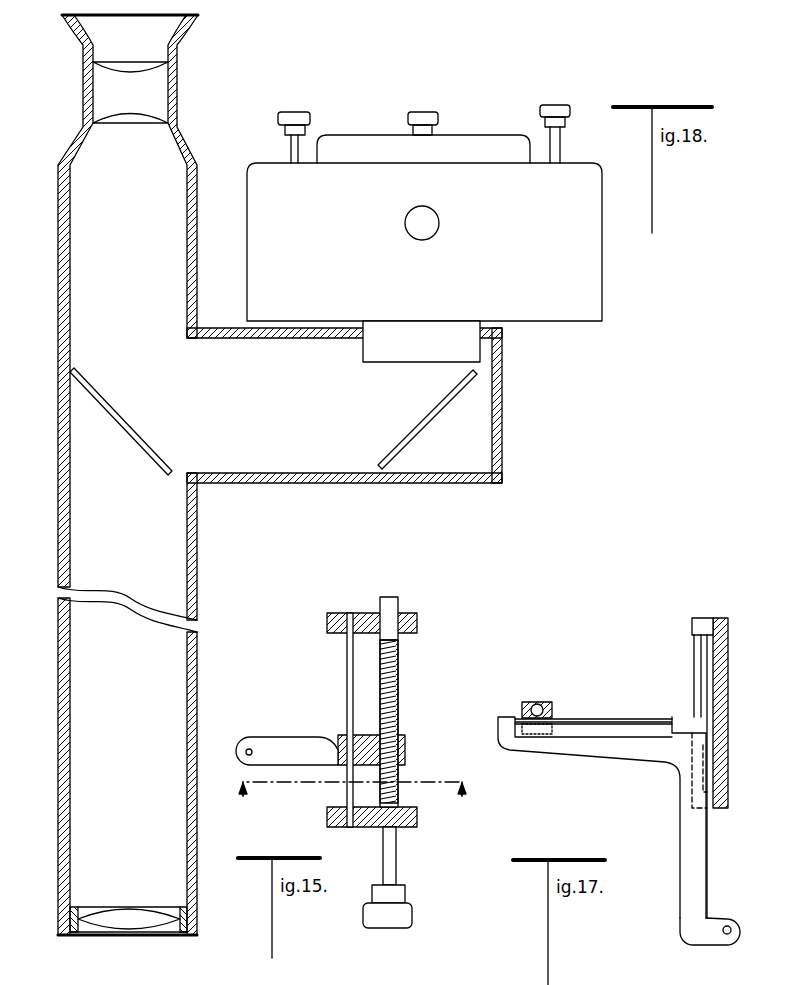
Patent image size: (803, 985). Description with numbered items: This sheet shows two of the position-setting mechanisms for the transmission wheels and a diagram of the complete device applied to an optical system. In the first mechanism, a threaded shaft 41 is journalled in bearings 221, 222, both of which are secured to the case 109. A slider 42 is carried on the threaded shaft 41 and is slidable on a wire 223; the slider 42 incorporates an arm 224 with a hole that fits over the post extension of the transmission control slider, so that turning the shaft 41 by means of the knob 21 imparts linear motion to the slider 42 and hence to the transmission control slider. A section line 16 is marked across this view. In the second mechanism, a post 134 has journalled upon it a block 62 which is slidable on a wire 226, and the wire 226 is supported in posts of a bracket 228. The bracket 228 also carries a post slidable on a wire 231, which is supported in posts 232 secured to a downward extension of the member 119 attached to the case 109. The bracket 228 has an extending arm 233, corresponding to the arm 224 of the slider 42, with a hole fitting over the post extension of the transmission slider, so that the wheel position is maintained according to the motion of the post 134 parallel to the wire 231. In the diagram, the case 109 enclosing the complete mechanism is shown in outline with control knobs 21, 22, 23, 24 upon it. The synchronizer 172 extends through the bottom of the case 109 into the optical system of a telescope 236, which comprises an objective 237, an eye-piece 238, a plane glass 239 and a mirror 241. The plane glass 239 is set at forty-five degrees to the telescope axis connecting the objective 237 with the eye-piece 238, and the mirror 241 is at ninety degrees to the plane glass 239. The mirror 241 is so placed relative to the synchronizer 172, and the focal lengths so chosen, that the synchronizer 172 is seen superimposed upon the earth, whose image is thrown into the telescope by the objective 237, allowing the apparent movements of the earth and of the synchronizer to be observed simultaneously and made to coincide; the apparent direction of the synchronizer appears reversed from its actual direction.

In FIG. 18, the telescope 236 is at (61, 386).
In FIG. 18, the eye-piece 238 is at (150, 63).
In FIG. 18, the objective 237 is at (150, 890).
In FIG. 18, the plane glass 239 is at (161, 463).
In FIG. 18, the mirror 241 is at (393, 456).
In FIG. 18, the case 109 is at (553, 323).
In FIG. 18, the synchronizer 172 is at (367, 352).
In FIG. 18, the control knob 21 is at (439, 223).
In FIG. 15, the control knob 21 is at (412, 910).
In FIG. 18, the control knob 22 is at (423, 112).
In FIG. 18, the control knob 23 is at (552, 105).
In FIG. 18, the control knob 24 is at (294, 112).
In FIG. 15, the bearing 221 is at (418, 628).
In FIG. 15, the bearing 222 is at (418, 820).
In FIG. 15, the wire 223 is at (347, 697).
In FIG. 15, the arm 224 is at (291, 738).
In FIG. 15, the threaded shaft 41 is at (398, 688).
In FIG. 15, the slider 42 is at (406, 762).
In FIG. 15, the section line 16 is at (355, 802).
In FIG. 17, the bracket 228 is at (593, 752).
In FIG. 17, the extending arm 233 is at (714, 947).
In FIG. 17, the wire 226 is at (641, 720).
In FIG. 17, the block 62 is at (553, 710).
In FIG. 17, the post 134 is at (530, 704).
In FIG. 17, the member 119 is at (729, 668).
In FIG. 17, the post 232 is at (697, 622).
In FIG. 17, the wire 231 is at (697, 680).